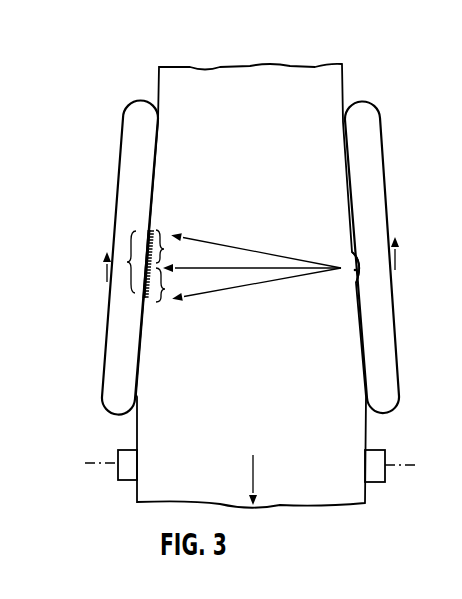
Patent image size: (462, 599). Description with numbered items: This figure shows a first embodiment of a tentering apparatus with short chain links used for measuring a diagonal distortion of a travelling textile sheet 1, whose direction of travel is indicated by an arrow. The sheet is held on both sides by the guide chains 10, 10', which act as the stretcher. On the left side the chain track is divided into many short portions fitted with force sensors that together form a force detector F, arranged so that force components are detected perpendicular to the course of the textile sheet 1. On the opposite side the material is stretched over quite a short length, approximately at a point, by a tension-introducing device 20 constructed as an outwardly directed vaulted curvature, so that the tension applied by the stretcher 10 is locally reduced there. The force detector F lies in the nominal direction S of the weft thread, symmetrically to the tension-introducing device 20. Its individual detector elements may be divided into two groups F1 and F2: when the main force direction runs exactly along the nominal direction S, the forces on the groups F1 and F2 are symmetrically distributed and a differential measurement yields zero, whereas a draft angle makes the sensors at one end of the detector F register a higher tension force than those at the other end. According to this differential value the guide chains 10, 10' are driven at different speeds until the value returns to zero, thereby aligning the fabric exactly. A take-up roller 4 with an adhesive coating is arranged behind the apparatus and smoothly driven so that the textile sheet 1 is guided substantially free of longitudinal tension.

The textile sheet 1 is at (328, 492).
The take-up roller 4 is at (380, 473).
The guide chain 10 is at (388, 256).
The guide chain 10' is at (110, 258).
The tension-introducing device 20 is at (362, 258).
The force detector F is at (131, 240).
The first group of detector elements F1 is at (164, 249).
The second group of detector elements F2 is at (165, 290).
The nominal direction of the weft thread S is at (192, 268).